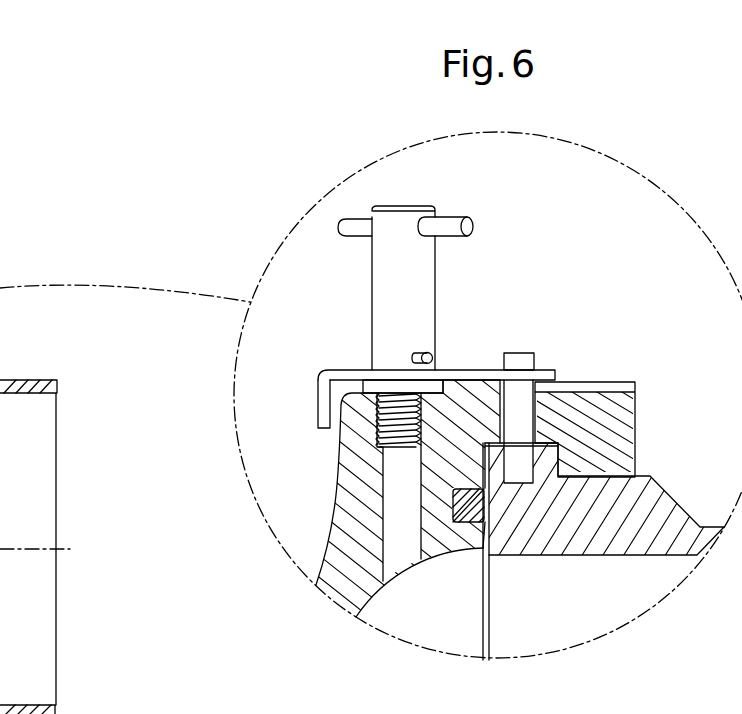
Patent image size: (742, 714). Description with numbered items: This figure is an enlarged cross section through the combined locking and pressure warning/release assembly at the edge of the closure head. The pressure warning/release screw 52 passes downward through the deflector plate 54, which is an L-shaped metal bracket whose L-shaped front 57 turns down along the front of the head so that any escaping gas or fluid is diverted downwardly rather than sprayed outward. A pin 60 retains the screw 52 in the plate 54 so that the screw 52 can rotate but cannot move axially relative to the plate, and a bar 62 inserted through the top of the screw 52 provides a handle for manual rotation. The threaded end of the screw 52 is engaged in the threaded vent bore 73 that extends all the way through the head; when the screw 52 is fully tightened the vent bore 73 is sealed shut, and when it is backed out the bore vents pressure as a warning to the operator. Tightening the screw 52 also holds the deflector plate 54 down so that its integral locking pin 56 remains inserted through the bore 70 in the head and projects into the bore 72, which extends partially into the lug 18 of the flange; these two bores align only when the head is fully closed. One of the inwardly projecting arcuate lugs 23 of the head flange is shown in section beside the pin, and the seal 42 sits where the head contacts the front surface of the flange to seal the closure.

The lug 18 is at (545, 465).
The arcuate lug 23 is at (635, 441).
The seal 42 is at (455, 524).
The pressure warning/release screw 52 is at (435, 290).
The deflector plate 54 is at (338, 369).
The locking pin 56 is at (519, 352).
The L-shaped front 57 is at (318, 400).
The pin 60 is at (433, 357).
The bar 62 is at (473, 228).
The bore 70 is at (550, 400).
The bore 72 is at (515, 485).
The threaded vent bore 73 is at (404, 556).